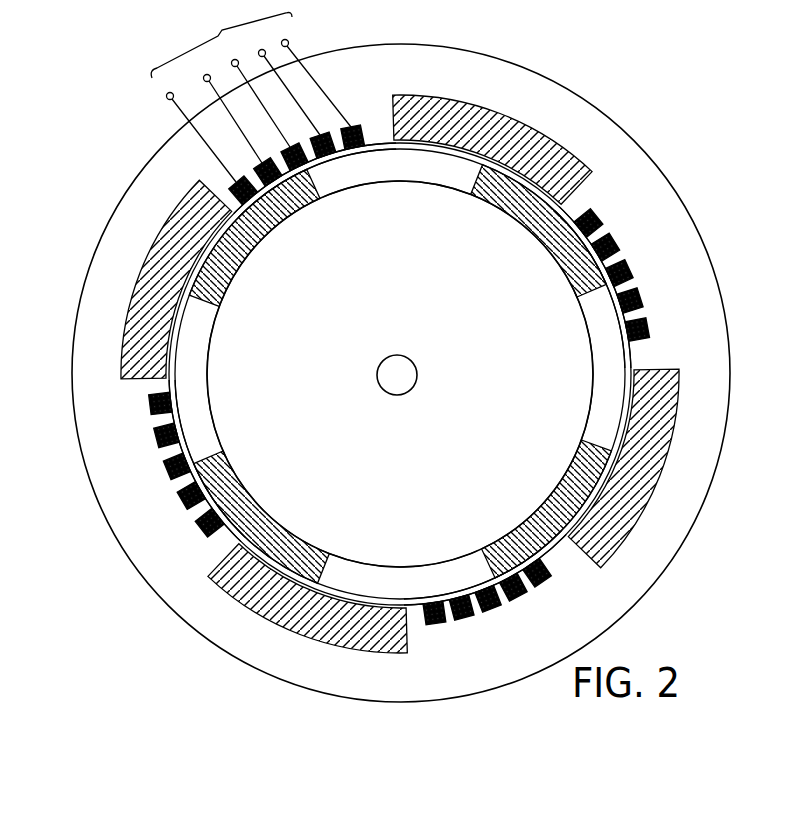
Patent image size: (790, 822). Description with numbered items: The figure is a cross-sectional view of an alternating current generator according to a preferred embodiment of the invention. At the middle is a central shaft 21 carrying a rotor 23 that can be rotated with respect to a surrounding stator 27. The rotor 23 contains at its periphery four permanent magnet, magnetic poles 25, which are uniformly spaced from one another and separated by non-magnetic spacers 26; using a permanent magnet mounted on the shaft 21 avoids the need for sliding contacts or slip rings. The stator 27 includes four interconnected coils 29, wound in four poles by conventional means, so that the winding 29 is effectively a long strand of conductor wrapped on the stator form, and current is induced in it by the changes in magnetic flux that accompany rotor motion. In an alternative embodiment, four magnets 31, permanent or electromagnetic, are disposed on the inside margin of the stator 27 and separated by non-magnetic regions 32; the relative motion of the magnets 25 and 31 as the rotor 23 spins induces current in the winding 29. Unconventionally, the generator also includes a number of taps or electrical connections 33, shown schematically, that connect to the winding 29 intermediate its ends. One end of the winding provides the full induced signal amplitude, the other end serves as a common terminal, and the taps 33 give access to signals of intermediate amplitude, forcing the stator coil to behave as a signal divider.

The central shaft 21 is at (417, 370).
The rotor 23 is at (594, 372).
The permanent magnet magnetic poles 25 is at (242, 265).
The non-magnetic spacers 26 is at (457, 180).
The stator 27 is at (667, 537).
The coils 29 is at (362, 142).
The magnets 31 is at (547, 147).
The non-magnetic regions 32 is at (588, 200).
The taps 33 is at (219, 35).